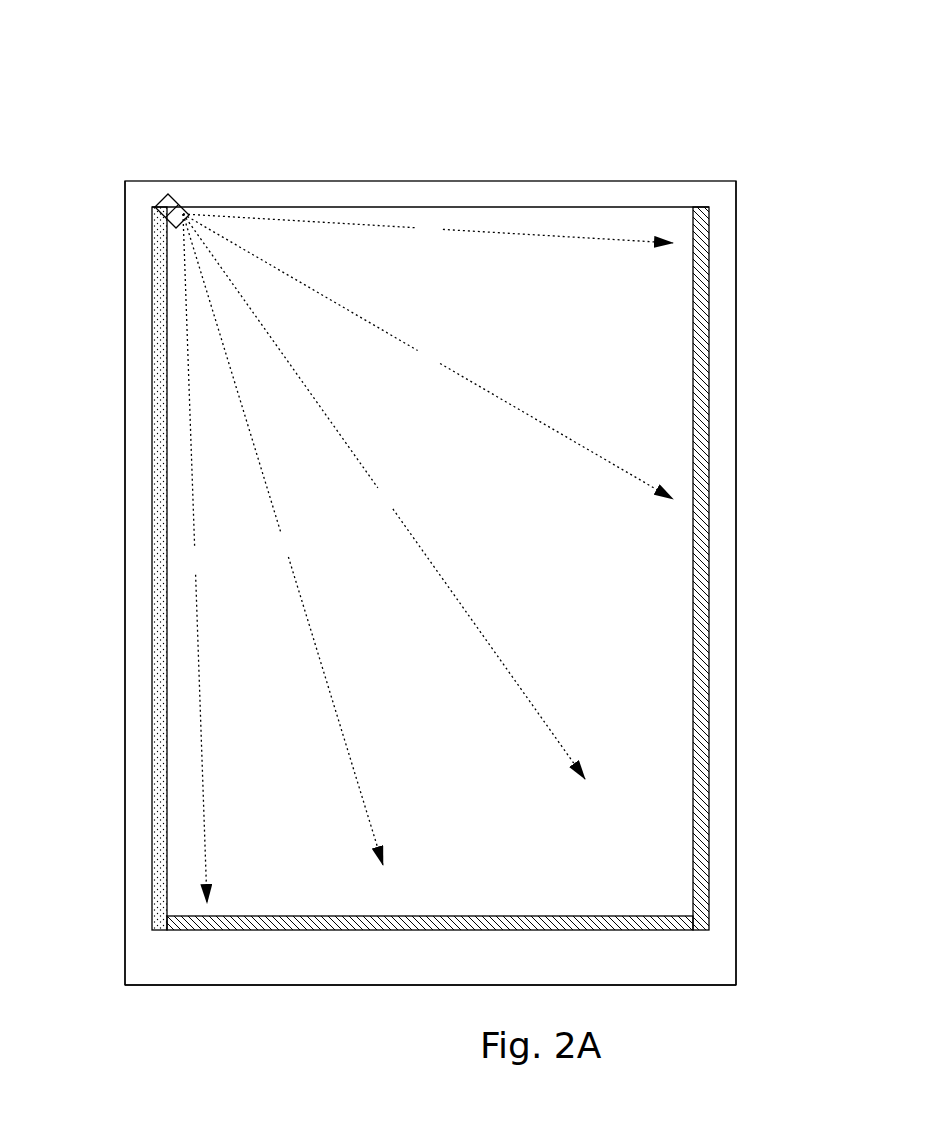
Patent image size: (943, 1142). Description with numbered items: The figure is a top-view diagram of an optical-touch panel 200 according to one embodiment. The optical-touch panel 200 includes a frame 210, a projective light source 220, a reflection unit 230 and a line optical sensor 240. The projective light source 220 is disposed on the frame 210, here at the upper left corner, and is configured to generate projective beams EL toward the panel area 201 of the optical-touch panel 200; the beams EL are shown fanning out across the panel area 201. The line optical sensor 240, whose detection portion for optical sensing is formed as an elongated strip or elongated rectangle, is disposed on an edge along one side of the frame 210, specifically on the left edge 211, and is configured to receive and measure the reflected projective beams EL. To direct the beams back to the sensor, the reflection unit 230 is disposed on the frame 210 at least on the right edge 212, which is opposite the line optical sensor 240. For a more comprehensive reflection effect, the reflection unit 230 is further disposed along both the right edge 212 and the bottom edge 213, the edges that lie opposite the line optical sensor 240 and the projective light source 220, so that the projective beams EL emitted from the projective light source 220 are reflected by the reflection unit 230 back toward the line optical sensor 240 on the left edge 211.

The optical-touch panel 200 is at (543, 104).
The frame 210 is at (710, 181).
The left edge 211 is at (140, 508).
The right edge 212 is at (718, 484).
The bottom edge 213 is at (383, 943).
The projective light source 220 is at (170, 195).
The reflection unit 230 is at (705, 297).
The line optical sensor 240 is at (152, 304).
The panel area 201 is at (542, 552).